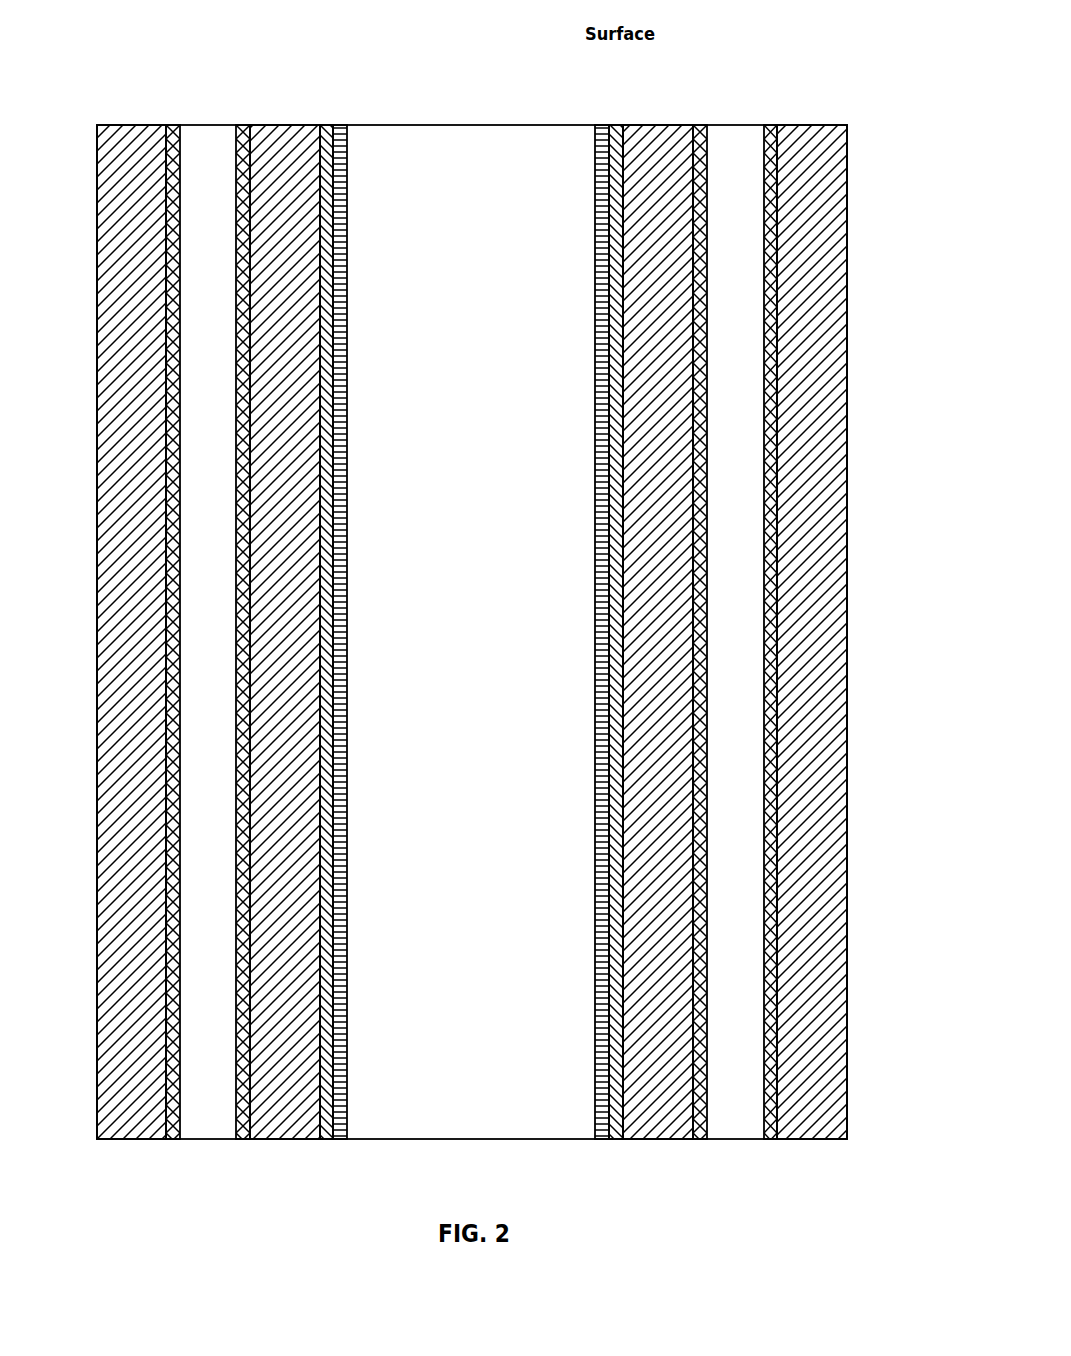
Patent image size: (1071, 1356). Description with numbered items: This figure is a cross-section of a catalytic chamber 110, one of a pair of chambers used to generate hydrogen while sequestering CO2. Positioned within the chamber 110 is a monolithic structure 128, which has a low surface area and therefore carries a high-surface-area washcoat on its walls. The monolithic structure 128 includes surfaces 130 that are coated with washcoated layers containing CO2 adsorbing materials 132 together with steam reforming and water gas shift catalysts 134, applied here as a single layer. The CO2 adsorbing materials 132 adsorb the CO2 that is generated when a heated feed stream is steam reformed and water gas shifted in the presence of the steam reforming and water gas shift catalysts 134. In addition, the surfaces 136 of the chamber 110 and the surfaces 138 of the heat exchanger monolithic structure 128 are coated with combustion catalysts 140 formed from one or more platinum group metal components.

The catalytic chamber 110 is at (478, 124).
The monolithic structure 128 is at (283, 125).
The surface 130 is at (320, 125).
The CO2 adsorbing material 132 is at (343, 272).
The steam reforming and water gas shift catalyst 134 is at (323, 232).
The surface of chamber 136 is at (166, 125).
The surface of heat exchanger monolithic structure 138 is at (250, 125).
The combustion catalyst 140 is at (178, 272).